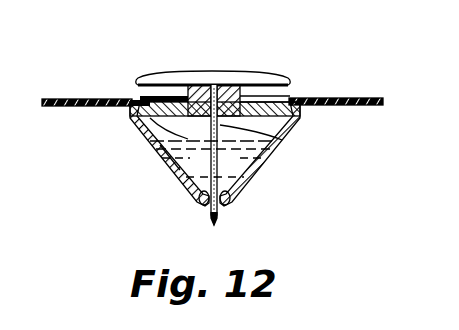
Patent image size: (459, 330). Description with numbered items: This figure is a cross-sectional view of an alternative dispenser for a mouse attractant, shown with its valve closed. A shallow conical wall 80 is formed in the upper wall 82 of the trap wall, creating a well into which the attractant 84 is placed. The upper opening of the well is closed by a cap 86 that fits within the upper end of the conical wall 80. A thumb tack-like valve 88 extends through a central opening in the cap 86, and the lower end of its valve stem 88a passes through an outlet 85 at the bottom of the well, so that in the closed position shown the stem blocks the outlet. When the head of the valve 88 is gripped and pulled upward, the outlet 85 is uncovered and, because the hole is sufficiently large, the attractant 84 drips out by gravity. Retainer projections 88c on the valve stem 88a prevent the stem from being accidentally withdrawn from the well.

The conical wall 80 is at (258, 170).
The upper wall 82 is at (349, 96).
The attractant 84 is at (172, 152).
The outlet 85 is at (220, 218).
The cap 86 is at (150, 100).
The valve 88 is at (203, 71).
The valve stem 88a is at (266, 140).
The retainer projections 88c is at (193, 197).